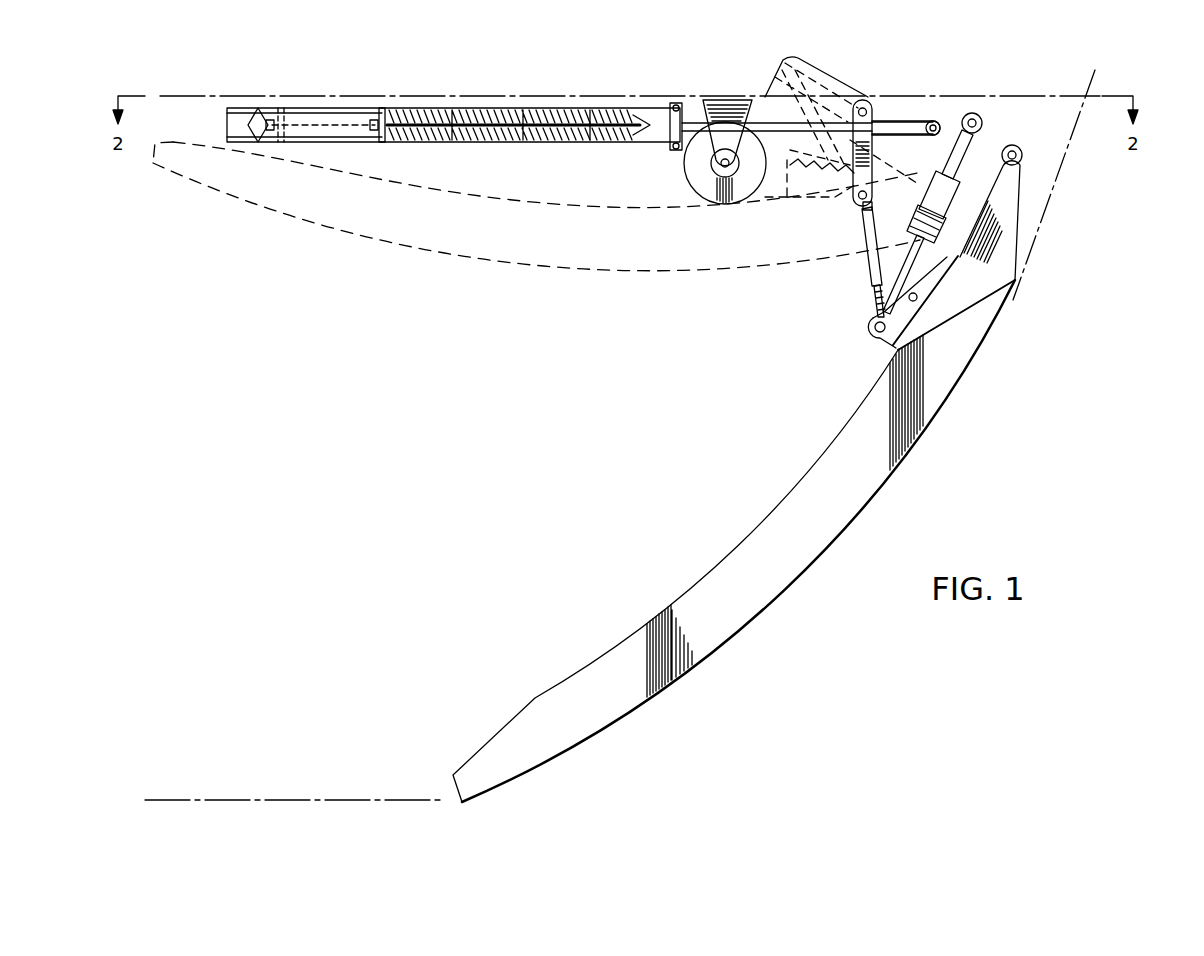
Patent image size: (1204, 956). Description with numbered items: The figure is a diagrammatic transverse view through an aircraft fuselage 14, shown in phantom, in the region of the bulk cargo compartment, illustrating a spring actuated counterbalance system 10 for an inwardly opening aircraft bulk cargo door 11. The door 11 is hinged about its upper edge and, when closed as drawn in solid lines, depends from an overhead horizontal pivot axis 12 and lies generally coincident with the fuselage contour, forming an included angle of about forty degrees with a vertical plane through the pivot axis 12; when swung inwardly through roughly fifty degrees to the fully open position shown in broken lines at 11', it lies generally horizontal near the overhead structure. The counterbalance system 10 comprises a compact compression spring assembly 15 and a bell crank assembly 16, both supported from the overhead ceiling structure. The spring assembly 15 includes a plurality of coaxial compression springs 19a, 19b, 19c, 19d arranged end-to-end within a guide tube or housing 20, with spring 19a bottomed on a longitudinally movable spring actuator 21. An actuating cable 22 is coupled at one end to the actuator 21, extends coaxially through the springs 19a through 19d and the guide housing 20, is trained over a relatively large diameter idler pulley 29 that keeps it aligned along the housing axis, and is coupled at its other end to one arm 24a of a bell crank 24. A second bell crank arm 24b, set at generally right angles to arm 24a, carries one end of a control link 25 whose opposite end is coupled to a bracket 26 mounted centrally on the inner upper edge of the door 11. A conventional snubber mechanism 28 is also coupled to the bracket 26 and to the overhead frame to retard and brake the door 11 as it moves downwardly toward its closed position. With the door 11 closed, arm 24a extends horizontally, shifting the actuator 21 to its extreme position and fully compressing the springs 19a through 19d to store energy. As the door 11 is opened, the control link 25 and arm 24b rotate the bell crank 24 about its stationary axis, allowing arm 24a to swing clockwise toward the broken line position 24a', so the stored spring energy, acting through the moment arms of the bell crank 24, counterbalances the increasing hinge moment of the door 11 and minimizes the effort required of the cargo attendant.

The counterbalance system 10 is at (787, 252).
The aircraft bulk cargo door 11 is at (734, 541).
The fully open position of door 11' is at (535, 195).
The pivot axis 12 is at (1022, 156).
The aircraft fuselage 14 is at (1060, 183).
The compression spring assembly 15 is at (475, 162).
The bell crank assembly 16 is at (935, 84).
The compression spring 19a is at (430, 110).
The compression spring 19b is at (498, 110).
The compression spring 19c is at (563, 110).
The compression spring 19d is at (620, 110).
The guide tube or housing 20 is at (647, 150).
The spring actuator 21 is at (376, 110).
The actuating cable 22 is at (760, 118).
The bell crank 24 is at (872, 104).
The bell crank arm 24a is at (946, 103).
The rotated position of bell crank arm 24a' is at (833, 108).
The second bell crank arm 24b is at (850, 190).
The control link 25 is at (873, 258).
The bracket 26 is at (892, 343).
The snubber mechanism 28 is at (952, 207).
The idler pulley 29 is at (687, 180).